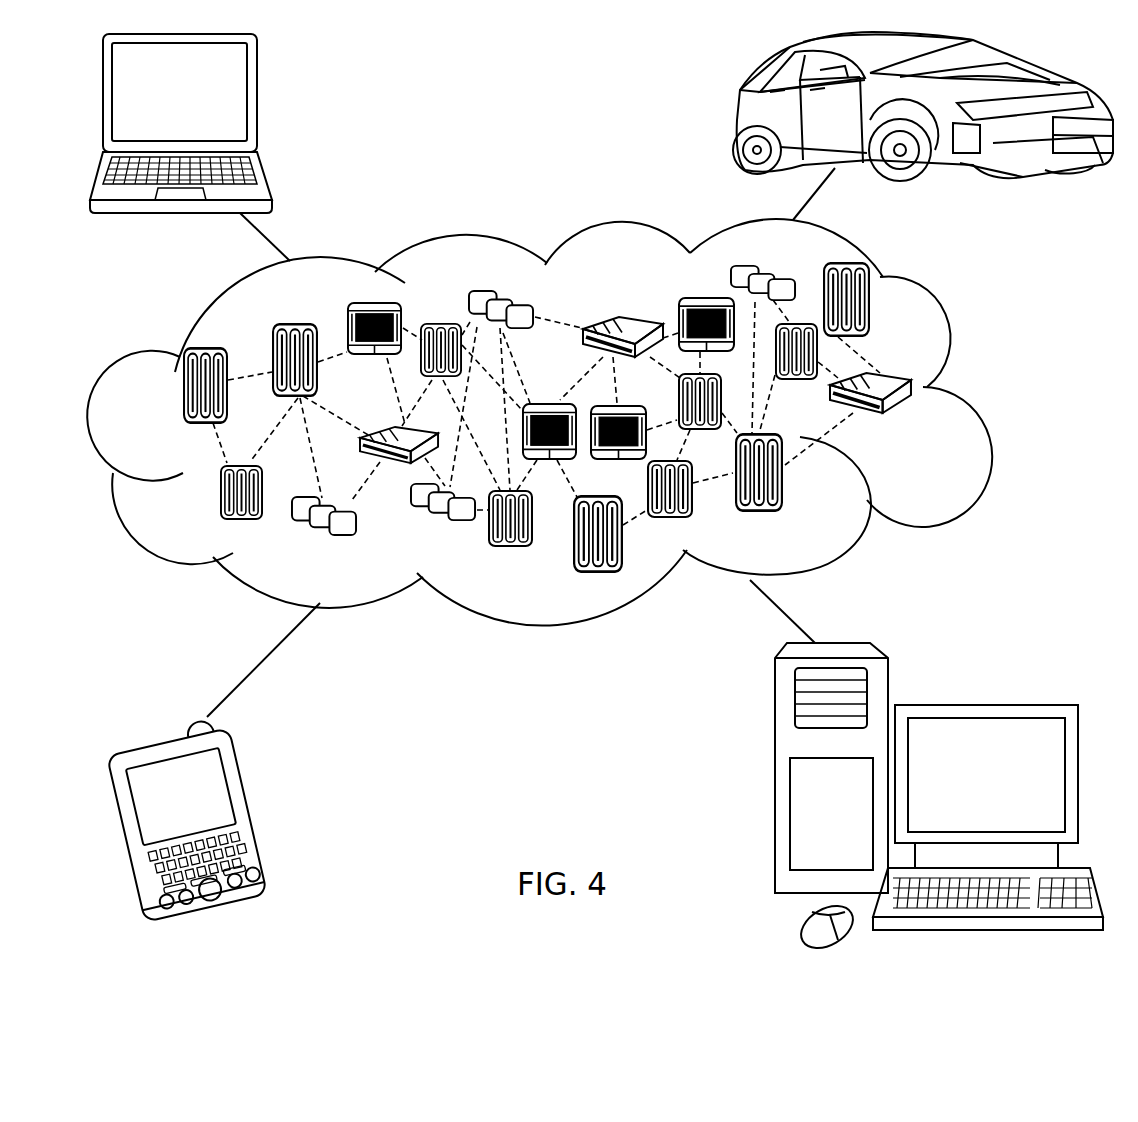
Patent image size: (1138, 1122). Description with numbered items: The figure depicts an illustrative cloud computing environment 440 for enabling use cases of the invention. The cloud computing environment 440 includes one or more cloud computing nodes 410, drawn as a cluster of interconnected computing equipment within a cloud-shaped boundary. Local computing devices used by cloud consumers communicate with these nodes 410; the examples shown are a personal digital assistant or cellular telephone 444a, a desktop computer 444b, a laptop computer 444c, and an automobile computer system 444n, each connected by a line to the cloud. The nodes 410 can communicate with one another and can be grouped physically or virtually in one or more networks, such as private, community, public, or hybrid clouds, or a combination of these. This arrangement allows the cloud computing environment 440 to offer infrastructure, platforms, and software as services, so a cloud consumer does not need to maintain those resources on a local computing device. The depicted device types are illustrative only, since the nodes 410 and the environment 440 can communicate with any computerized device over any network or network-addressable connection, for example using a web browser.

The personal digital assistant (PDA) or cellular telephone 444a is at (250, 812).
The desktop computer 444b is at (982, 703).
The laptop computer 444c is at (258, 102).
The automobile computer system 444n is at (738, 112).
The cloud computing environment 440 is at (980, 392).
The cloud computing nodes 410 is at (924, 427).